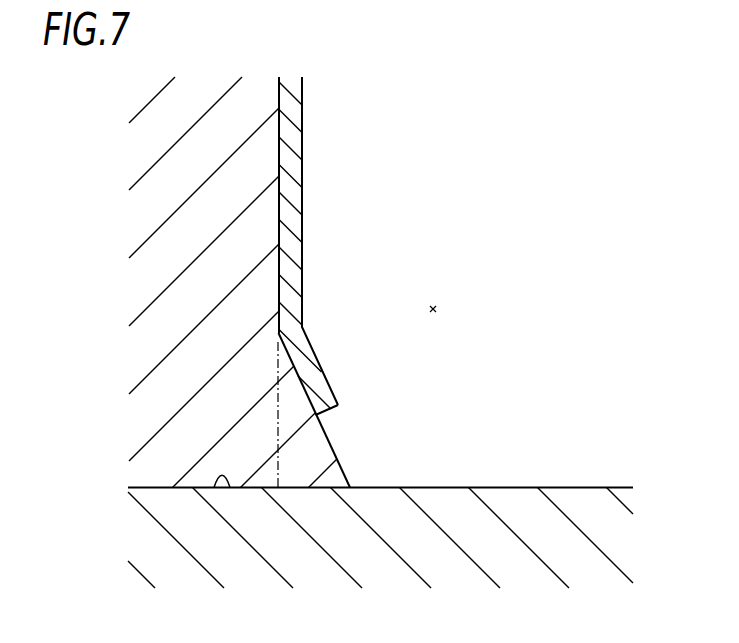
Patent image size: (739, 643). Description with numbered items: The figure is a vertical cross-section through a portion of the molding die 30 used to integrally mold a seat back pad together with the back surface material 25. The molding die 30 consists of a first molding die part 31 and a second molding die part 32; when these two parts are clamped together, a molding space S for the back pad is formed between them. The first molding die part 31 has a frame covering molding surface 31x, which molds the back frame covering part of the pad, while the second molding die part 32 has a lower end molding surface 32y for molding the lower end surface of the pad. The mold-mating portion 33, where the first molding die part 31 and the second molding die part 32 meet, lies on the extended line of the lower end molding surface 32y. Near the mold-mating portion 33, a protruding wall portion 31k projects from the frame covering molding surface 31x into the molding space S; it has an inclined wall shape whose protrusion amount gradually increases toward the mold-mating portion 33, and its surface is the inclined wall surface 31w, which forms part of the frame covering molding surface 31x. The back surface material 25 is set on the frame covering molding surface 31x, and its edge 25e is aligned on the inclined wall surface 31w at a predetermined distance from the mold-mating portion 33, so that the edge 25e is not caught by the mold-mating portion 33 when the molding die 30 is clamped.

The molding die 30 is at (112, 145).
The first molding die part 31 is at (210, 213).
The frame covering molding surface 31x is at (282, 200).
The inclined wall surface 31w is at (333, 445).
The protruding wall portion 31k is at (295, 420).
The back surface material 25 is at (292, 135).
The edge of the back surface material 25e is at (315, 380).
The molding space S is at (435, 308).
The second molding die part 32 is at (355, 541).
The lower end molding surface 32y is at (495, 487).
The mold-mating portion 33 is at (214, 488).